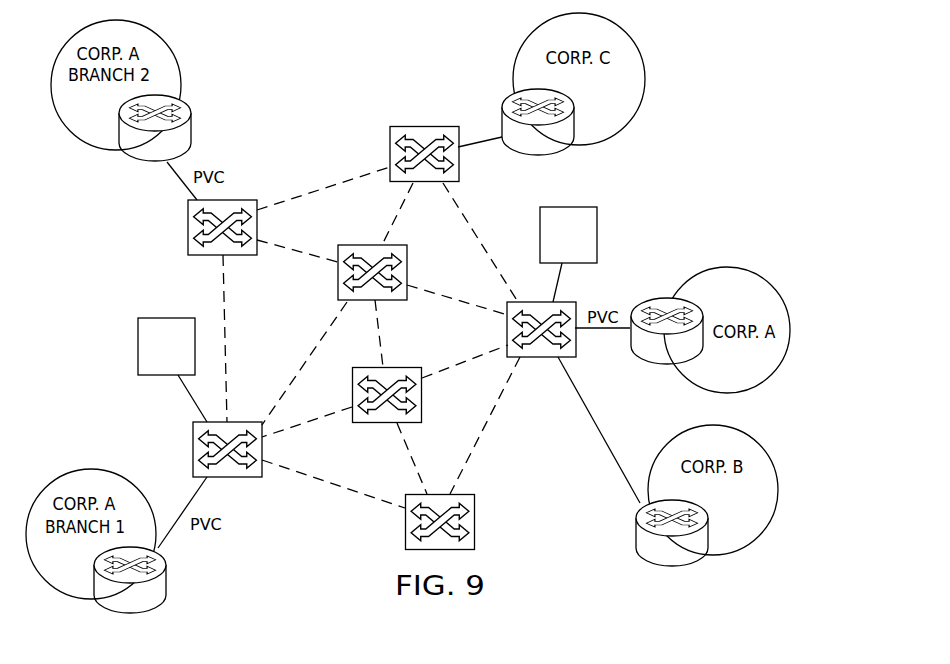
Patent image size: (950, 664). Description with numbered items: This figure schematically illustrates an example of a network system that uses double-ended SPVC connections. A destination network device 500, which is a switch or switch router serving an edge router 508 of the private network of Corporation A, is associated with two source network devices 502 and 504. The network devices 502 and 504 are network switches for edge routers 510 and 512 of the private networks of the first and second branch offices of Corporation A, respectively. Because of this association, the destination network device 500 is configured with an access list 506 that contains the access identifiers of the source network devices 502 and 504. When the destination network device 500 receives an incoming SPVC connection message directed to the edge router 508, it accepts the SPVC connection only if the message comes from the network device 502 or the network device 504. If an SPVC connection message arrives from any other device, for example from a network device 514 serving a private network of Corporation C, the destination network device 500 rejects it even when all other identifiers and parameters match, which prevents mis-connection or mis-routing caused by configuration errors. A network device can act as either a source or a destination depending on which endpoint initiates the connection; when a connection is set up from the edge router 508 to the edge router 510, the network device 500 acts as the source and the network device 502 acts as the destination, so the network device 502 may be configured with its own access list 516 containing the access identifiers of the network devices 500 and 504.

The destination network device 500 is at (543, 357).
The source network device 502 is at (193, 448).
The source network device 504 is at (188, 224).
The access list 506 is at (597, 235).
The edge router 508 is at (643, 348).
The edge router 510 is at (157, 590).
The edge router 512 is at (187, 108).
The network device 514 is at (425, 126).
The access list 516 is at (138, 347).